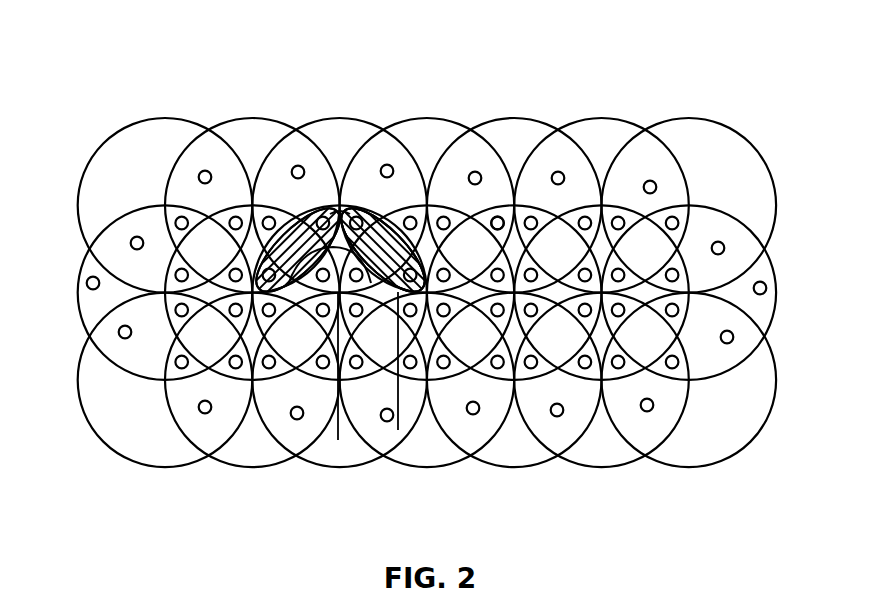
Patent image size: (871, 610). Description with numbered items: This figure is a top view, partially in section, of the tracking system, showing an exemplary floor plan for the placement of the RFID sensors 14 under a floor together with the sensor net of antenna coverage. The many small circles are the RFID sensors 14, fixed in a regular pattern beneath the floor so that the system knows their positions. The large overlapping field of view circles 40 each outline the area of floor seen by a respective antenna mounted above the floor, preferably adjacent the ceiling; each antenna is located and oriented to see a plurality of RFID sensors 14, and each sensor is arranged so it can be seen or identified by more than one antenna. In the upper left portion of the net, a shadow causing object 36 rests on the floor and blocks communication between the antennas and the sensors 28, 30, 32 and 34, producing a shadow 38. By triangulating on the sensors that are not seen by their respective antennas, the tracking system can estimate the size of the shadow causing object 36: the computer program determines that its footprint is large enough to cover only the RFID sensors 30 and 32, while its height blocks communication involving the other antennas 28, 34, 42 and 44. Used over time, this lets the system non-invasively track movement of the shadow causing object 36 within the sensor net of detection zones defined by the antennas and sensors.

The RFID sensors 14 is at (198, 176).
The field of view circles 40 is at (78, 205).
The RFID sensor 28 is at (283, 250).
The shadow causing object 36 is at (305, 232).
The antenna 44 is at (392, 230).
The shadow 38 is at (415, 240).
The antenna 42 is at (352, 222).
The RFID sensor 34 is at (496, 216).
The RFID sensor 30 is at (338, 440).
The RFID sensor 32 is at (398, 430).